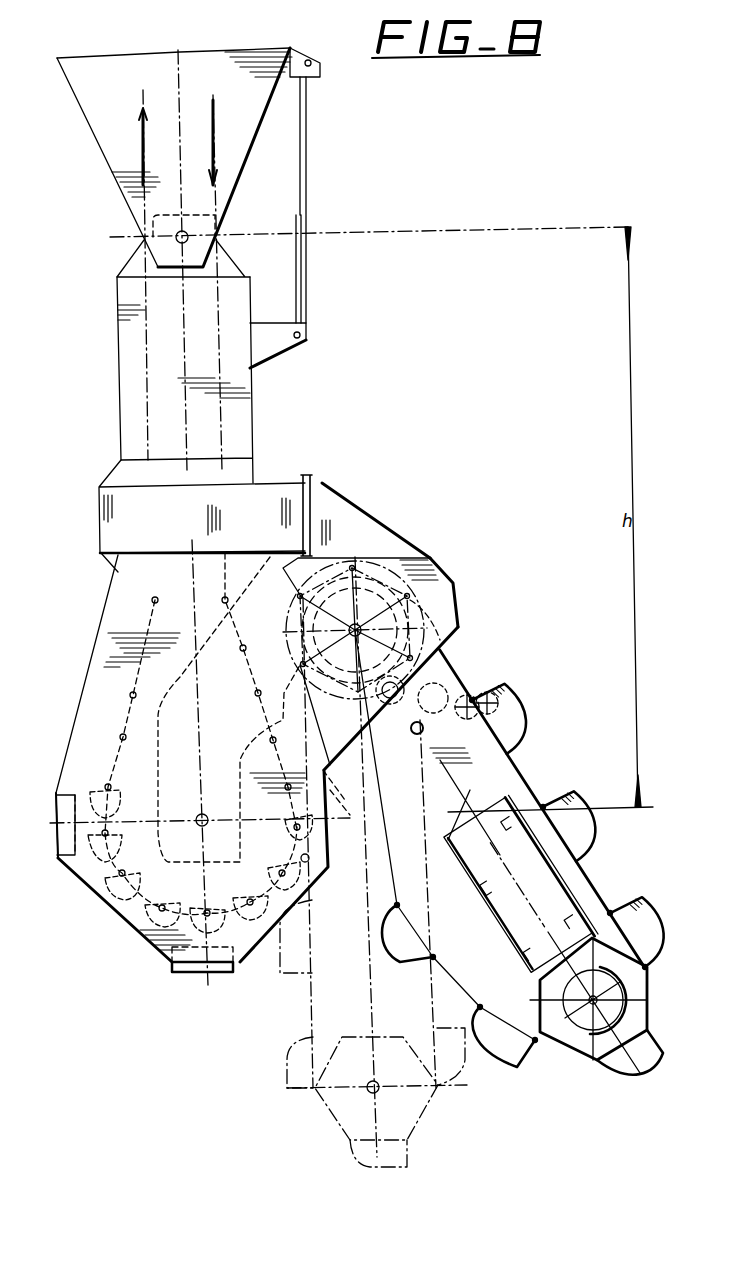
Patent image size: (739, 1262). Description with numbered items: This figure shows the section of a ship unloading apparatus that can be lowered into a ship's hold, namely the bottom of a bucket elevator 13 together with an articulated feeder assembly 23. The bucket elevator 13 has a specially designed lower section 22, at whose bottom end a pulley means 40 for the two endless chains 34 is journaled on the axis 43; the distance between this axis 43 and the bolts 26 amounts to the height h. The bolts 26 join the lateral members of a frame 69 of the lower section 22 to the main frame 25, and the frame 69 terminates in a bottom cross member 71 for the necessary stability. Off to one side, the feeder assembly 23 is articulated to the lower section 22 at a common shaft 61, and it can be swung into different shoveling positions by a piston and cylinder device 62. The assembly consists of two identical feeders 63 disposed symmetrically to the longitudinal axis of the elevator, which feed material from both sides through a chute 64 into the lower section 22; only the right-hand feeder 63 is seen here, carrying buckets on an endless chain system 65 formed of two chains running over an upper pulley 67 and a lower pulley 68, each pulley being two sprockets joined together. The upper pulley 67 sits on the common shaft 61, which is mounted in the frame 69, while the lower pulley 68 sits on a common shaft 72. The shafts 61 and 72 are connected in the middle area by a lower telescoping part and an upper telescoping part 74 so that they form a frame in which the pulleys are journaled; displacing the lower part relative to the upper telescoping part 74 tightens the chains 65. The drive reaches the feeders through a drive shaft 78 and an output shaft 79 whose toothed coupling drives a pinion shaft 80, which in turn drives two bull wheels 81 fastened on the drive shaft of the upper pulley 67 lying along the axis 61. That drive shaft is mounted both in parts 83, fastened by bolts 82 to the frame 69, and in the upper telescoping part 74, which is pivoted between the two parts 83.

The bucket elevator 13 is at (252, 146).
The lower section 22 is at (96, 575).
The feeder assembly 23 is at (498, 875).
The main frame 25 is at (236, 84).
The bolts 26 is at (195, 237).
The endless chains 34 is at (112, 770).
The pulley means 40 is at (68, 851).
The axis 43 is at (205, 814).
The common shaft 61 is at (365, 600).
The piston and cylinder device 62 is at (362, 818).
The feeders 63 is at (614, 890).
The chute 64 is at (165, 733).
The endless chain system 65 is at (592, 874).
The upper pulley 67 is at (405, 598).
The lower pulley 68 is at (645, 995).
The frame 69 is at (112, 612).
The bottom cross member 71 is at (193, 975).
The common shaft 72 is at (582, 1010).
The upper telescoping part 74 is at (474, 894).
The drive shaft 78 is at (505, 689).
The output shaft 79 is at (450, 668).
The pinion shaft 80 is at (382, 700).
The bull wheels 81 is at (445, 592).
The bolts 82 is at (312, 480).
The parts 83 is at (335, 512).